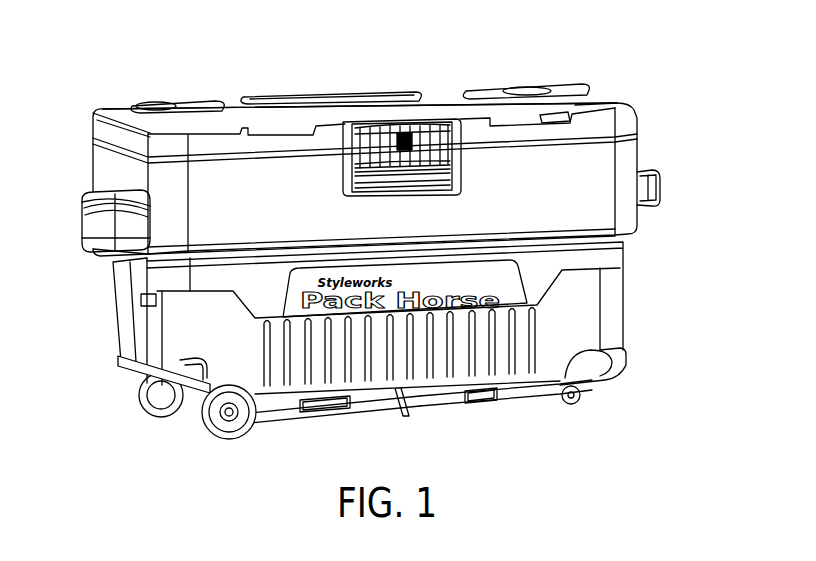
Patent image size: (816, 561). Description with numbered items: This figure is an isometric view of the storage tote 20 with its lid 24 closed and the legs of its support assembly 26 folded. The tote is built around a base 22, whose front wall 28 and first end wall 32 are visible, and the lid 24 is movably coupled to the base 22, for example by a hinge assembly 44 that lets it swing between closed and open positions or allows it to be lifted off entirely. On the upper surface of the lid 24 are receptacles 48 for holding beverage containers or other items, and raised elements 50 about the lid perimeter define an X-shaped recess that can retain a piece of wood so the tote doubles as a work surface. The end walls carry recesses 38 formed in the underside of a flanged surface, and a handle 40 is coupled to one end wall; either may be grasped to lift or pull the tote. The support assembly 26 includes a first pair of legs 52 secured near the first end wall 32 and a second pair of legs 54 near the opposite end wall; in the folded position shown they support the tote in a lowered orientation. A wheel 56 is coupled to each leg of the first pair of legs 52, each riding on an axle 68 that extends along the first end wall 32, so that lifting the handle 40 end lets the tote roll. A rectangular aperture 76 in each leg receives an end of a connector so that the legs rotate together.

The storage tote 20 is at (592, 66).
The base 22 is at (630, 319).
The lid 24 is at (593, 107).
The support assembly 26 is at (500, 428).
The front wall 28 is at (597, 187).
The first end wall 32 is at (147, 342).
The recess 38 is at (100, 258).
The handle 40 is at (660, 180).
The hinge assembly 44 is at (232, 96).
The receptacle 48 is at (152, 106).
The raised element 50 is at (196, 106).
The first pair of legs 52 is at (275, 421).
The second pair of legs 54 is at (547, 397).
The wheel 56 is at (160, 411).
The axle 68 is at (234, 418).
The aperture 76 is at (316, 412).